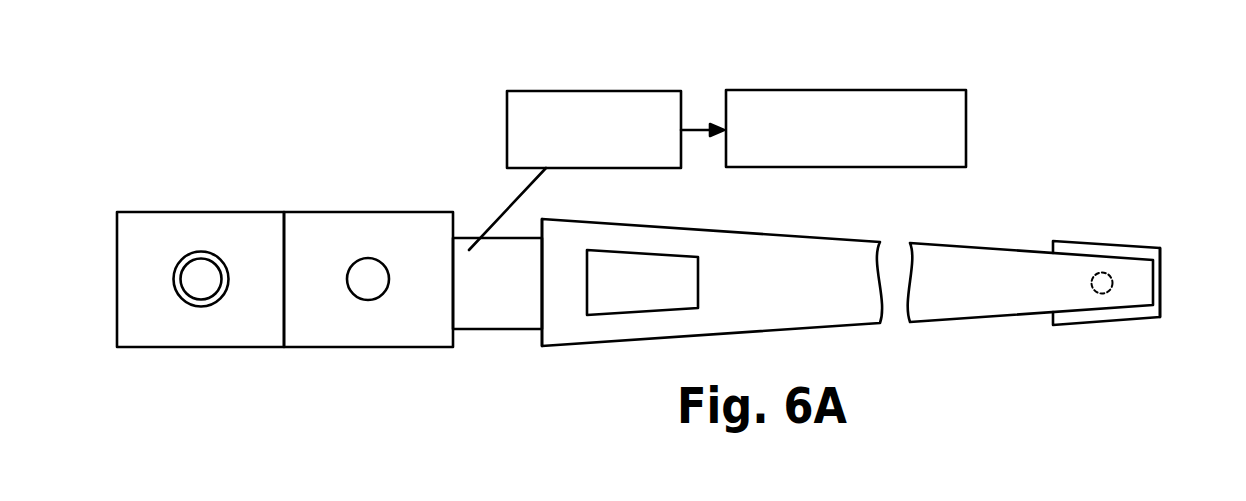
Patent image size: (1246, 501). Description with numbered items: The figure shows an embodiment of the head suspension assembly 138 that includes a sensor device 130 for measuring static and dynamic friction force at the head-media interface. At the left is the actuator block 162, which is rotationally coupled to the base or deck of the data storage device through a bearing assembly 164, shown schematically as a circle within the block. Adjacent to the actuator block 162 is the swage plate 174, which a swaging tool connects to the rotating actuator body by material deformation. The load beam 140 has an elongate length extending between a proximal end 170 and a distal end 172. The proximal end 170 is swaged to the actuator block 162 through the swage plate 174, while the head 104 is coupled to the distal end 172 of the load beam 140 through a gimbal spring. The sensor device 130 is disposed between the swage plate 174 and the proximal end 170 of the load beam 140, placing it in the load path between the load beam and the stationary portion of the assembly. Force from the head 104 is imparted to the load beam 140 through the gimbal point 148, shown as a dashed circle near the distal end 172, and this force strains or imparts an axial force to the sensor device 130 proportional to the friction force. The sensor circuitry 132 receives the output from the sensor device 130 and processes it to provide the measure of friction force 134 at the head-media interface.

The head 104 is at (1078, 248).
The sensor device 130 is at (520, 295).
The sensor circuitry 132 is at (607, 91).
The measure of friction force 134 is at (893, 90).
The head suspension assembly 138 is at (987, 218).
The load beam 140 is at (802, 297).
The gimbal point 148 is at (1107, 273).
The actuator block 162 is at (190, 218).
The bearing assembly 164 is at (197, 278).
The proximal end 170 is at (538, 226).
The distal end 172 is at (1160, 286).
The swage plate 174 is at (405, 222).